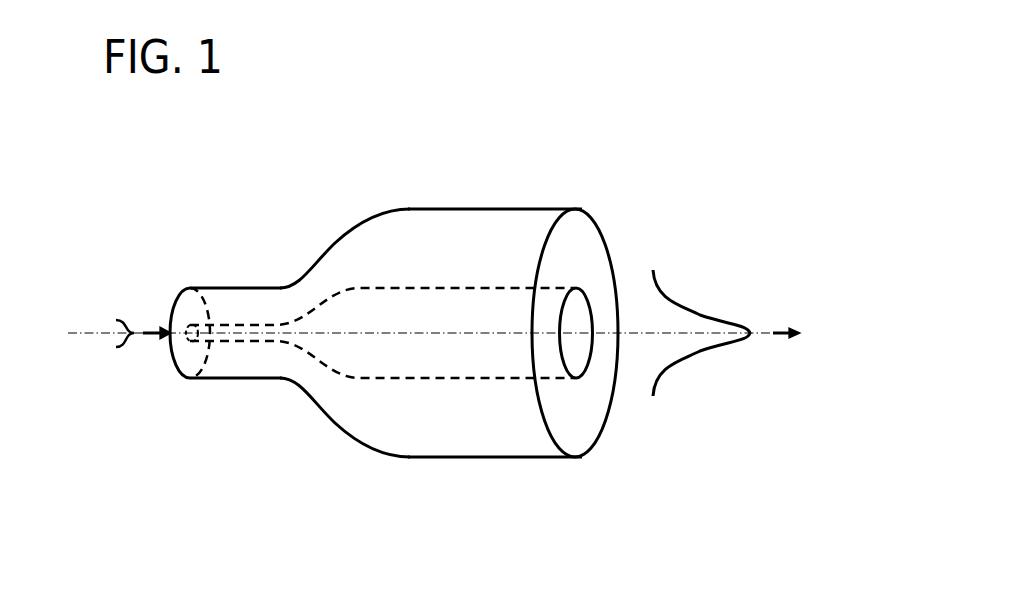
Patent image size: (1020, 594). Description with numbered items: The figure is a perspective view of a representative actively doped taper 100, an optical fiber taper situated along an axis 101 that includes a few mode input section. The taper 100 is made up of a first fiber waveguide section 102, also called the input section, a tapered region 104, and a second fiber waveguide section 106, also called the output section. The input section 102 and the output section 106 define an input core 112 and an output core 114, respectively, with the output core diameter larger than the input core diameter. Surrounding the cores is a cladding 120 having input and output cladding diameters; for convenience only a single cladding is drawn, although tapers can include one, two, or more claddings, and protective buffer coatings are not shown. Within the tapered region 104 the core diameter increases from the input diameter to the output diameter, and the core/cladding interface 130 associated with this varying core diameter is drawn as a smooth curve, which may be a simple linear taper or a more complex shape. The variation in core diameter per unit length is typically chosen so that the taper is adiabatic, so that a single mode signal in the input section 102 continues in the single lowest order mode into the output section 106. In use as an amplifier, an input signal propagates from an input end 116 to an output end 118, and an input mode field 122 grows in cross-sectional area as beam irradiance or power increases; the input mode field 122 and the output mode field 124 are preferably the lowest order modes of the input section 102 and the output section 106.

The actively doped taper 100 is at (127, 167).
The axis 101 is at (88, 333).
The first fiber waveguide section 102 is at (231, 266).
The tapered region 104 is at (314, 222).
The second fiber waveguide section 106 is at (490, 178).
The input core 112 is at (191, 330).
The output core 114 is at (573, 348).
The input end 116 is at (192, 363).
The output end 118 is at (588, 258).
The cladding 120 is at (347, 390).
The input mode field 122 is at (132, 313).
The output mode field 124 is at (697, 363).
The core/cladding interface 130 is at (452, 378).